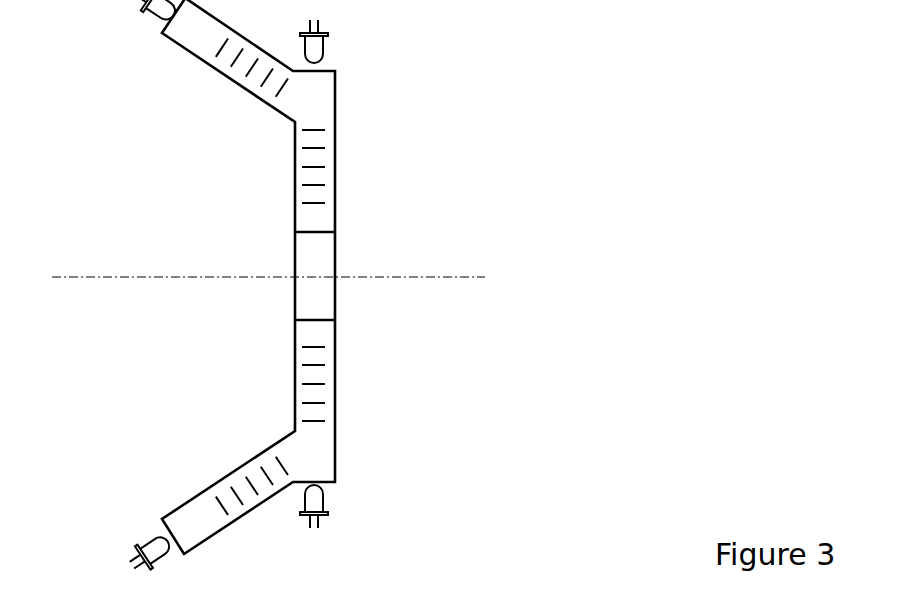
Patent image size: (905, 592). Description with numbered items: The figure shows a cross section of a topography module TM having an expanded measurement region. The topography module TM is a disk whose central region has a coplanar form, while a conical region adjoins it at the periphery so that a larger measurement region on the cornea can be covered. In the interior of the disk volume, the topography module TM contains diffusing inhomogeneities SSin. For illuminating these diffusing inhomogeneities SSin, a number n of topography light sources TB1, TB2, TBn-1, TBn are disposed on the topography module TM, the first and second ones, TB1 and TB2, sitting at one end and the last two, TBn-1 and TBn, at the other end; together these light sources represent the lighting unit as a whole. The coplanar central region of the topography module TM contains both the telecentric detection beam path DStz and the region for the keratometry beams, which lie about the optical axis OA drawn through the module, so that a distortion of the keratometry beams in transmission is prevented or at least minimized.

The topography module TM is at (282, 277).
The telecentric detection beam path DStz is at (323, 309).
The diffusing inhomogeneities SSin is at (210, 277).
The optical axis OA is at (190, 277).
The topography light source TB1 is at (148, 5).
The topography light source TB2 is at (327, 43).
The topography light source TBn-1 is at (327, 508).
The topography light source TBn is at (156, 543).